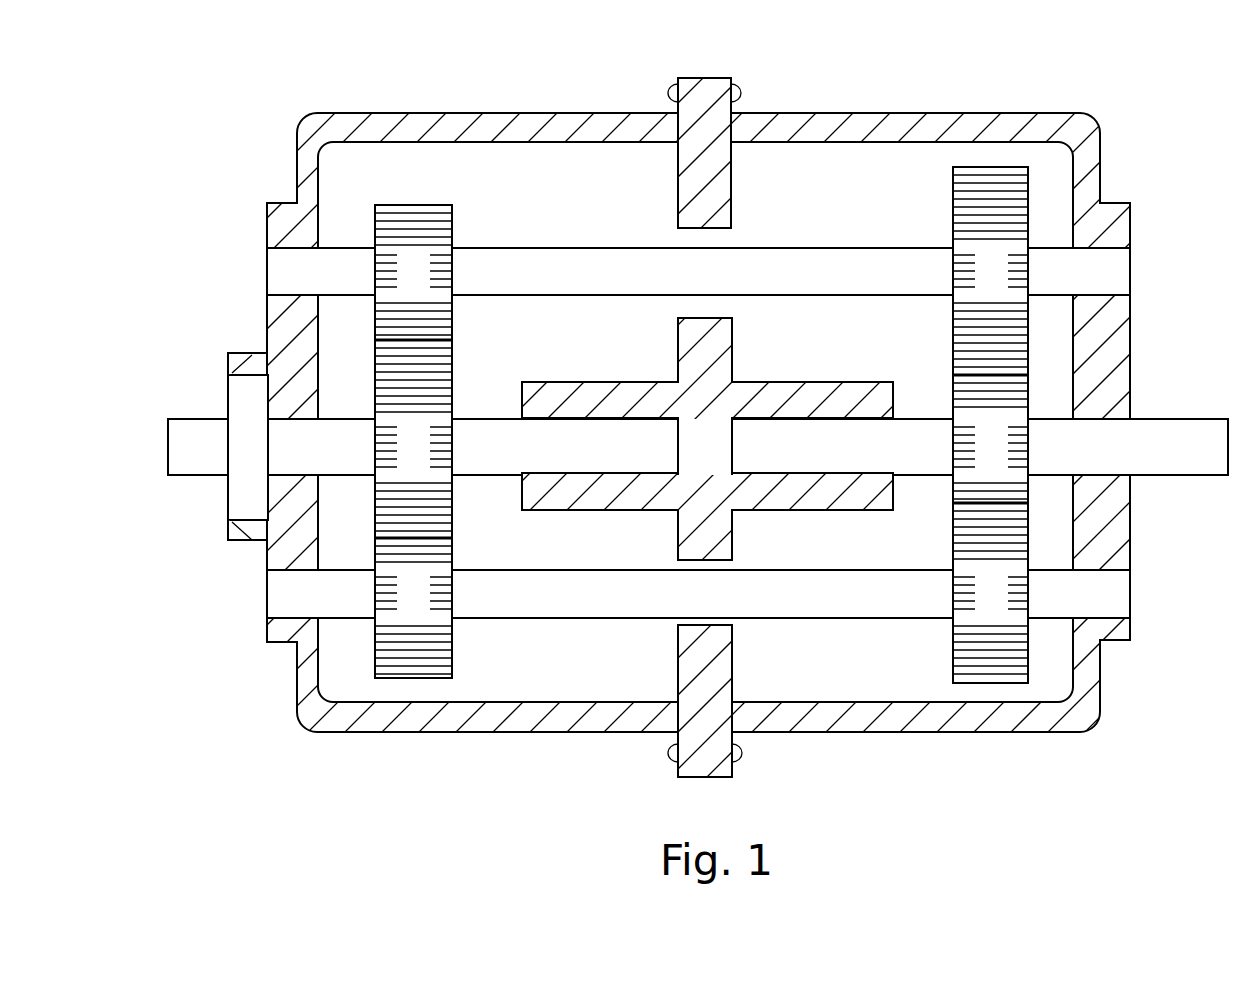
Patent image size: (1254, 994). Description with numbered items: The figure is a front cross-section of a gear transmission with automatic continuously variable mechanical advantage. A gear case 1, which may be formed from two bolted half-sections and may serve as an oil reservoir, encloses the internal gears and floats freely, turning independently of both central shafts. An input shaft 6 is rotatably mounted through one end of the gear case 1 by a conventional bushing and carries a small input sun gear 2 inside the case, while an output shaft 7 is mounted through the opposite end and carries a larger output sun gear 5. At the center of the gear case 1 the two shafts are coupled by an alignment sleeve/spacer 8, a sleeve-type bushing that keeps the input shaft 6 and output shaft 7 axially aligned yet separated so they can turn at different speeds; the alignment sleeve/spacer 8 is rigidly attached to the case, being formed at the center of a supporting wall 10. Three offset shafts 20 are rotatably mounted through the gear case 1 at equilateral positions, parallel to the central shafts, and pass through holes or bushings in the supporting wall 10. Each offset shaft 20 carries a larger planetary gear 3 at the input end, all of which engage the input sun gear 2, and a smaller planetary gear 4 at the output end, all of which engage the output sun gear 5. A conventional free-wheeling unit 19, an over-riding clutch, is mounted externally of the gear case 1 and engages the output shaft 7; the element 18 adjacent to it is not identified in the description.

The gear case 1 is at (564, 110).
The input sun gear 2 is at (990, 439).
The planetary gear 3 is at (990, 425).
The planetary gear 4 is at (413, 441).
The output sun gear 5 is at (413, 439).
The input shaft 6 is at (1060, 447).
The output shaft 7 is at (198, 447).
The alignment sleeve/spacer 8 is at (627, 400).
The supporting wall 10 is at (627, 400).
The seal 18 is at (253, 525).
The free-wheeling unit 19 is at (227, 400).
The offset shaft 20 is at (508, 245).